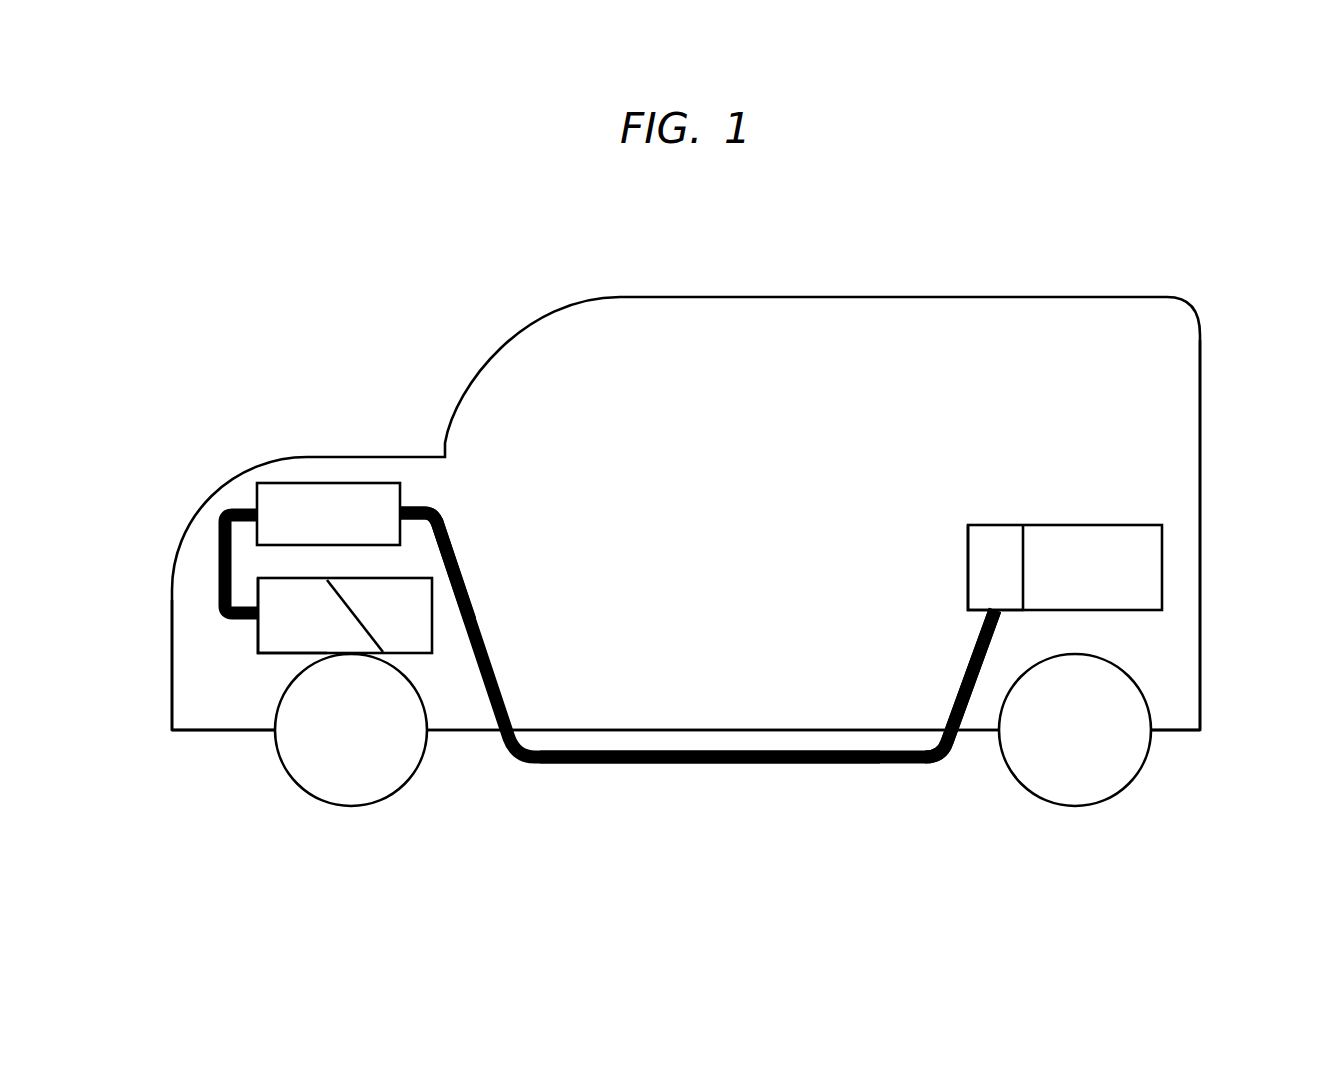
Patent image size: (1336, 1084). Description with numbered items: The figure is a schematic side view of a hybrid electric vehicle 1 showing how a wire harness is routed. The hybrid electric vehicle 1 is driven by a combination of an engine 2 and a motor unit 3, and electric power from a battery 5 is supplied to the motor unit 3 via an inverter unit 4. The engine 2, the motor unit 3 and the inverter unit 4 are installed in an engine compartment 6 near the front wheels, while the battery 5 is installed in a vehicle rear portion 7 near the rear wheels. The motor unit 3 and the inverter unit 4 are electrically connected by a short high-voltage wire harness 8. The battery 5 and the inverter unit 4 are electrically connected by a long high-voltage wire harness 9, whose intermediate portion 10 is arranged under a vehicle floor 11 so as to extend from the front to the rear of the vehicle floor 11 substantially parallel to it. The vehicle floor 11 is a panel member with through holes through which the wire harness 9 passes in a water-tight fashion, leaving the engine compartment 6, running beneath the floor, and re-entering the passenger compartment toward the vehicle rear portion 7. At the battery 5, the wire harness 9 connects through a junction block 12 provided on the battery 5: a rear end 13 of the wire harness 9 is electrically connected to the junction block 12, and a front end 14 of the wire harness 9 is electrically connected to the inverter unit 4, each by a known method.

The hybrid electric vehicle 1 is at (348, 334).
The engine 2 is at (408, 627).
The motor unit 3 is at (275, 630).
The inverter unit 4 is at (293, 502).
The battery 5 is at (1098, 542).
The engine compartment 6 is at (197, 692).
The vehicle rear portion 7 is at (1168, 645).
The high-voltage wire harness 8 is at (218, 552).
The high-voltage wire harness 9 is at (608, 765).
The intermediate portion 10 is at (758, 765).
The vehicle floor 11 is at (875, 728).
The junction block 12 is at (982, 542).
The rear end 13 is at (978, 637).
The front end 14 is at (437, 515).